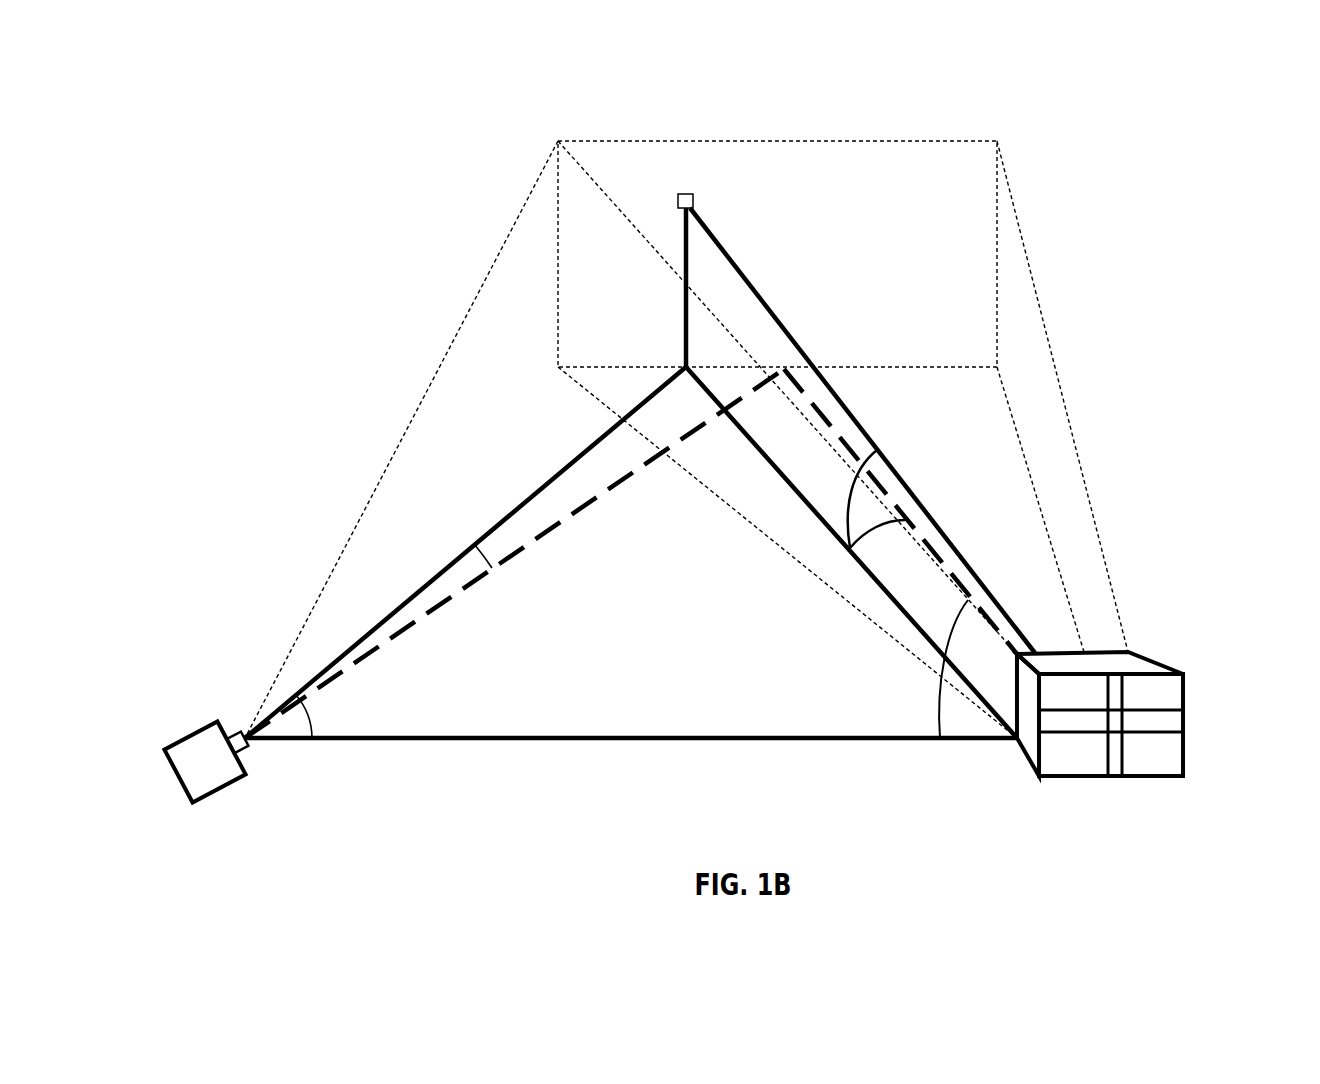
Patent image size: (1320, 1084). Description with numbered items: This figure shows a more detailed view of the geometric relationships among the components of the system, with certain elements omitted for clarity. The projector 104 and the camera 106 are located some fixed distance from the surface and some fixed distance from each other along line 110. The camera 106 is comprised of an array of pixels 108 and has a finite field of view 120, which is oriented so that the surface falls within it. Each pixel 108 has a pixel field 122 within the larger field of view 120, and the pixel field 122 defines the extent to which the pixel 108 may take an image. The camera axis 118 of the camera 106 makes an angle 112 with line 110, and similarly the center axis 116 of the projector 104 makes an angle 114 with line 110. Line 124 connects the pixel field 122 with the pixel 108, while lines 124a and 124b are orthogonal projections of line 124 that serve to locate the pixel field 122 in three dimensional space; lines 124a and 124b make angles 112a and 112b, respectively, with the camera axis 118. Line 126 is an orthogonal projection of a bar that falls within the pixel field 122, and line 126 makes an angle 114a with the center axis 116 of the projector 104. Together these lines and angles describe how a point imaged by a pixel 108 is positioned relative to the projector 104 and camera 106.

The projector 104 is at (230, 788).
The camera 106 is at (1185, 688).
The pixel 108 is at (1117, 720).
The line 110 is at (631, 768).
The angle 112 is at (937, 688).
The angle 112a is at (868, 538).
The angle 112b is at (848, 500).
The angle 114 is at (313, 718).
The angle 114a is at (487, 556).
The center axis 116 is at (595, 505).
The camera axis 118 is at (855, 450).
The field of view 120 is at (972, 140).
The pixel field 122 is at (690, 195).
The line 124 is at (760, 300).
The line 124a is at (745, 437).
The line 124b is at (684, 297).
The line 126 is at (565, 468).